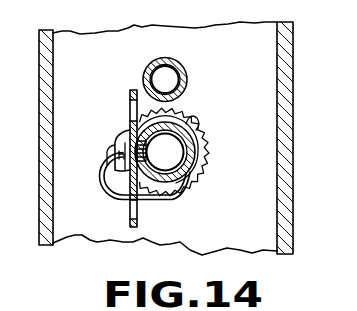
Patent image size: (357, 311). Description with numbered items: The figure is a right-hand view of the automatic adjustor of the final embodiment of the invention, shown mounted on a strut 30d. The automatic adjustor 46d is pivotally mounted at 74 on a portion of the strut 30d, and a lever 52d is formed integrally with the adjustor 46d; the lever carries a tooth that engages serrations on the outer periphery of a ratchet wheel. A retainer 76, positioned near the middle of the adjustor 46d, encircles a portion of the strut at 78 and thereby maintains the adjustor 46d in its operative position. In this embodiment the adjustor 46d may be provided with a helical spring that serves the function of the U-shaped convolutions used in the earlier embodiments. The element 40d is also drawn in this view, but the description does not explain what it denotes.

The toothed gear wheel 30d is at (196, 123).
The housing ring 40d is at (205, 171).
The retaining clip 46d is at (107, 146).
The support plate 52d is at (130, 228).
The latch member 74 is at (125, 136).
The spring band 76 is at (163, 200).
The bearing bushing 78 is at (201, 146).